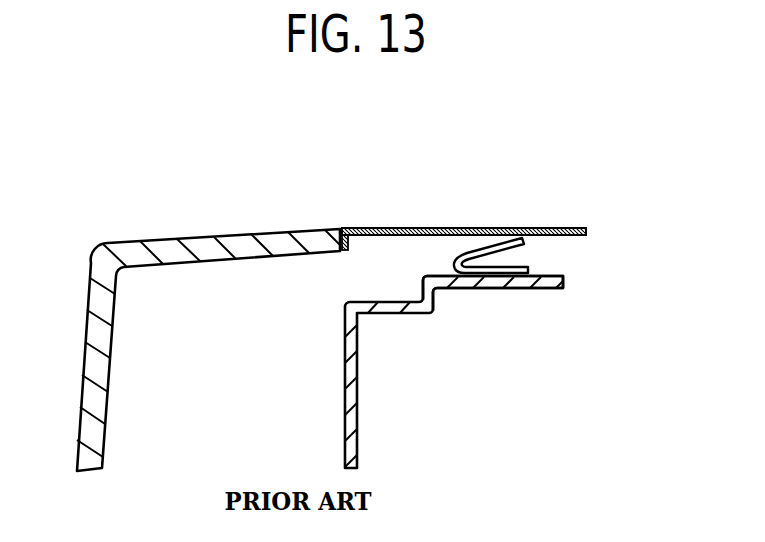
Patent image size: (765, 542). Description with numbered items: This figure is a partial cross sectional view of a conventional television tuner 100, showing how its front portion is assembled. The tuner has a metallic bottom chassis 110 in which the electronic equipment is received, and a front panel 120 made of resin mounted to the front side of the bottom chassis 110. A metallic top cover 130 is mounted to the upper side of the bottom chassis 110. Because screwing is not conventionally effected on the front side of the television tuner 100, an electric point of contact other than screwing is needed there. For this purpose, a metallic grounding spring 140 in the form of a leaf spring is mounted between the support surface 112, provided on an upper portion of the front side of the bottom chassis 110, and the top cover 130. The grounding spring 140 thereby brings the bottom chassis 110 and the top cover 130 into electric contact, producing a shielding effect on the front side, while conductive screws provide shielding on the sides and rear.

The television tuner 100 is at (329, 171).
The bottom chassis 110 is at (343, 372).
The support surface 112 is at (441, 277).
The front panel 120 is at (197, 236).
The top cover 130 is at (368, 228).
The grounding spring 140 is at (492, 238).